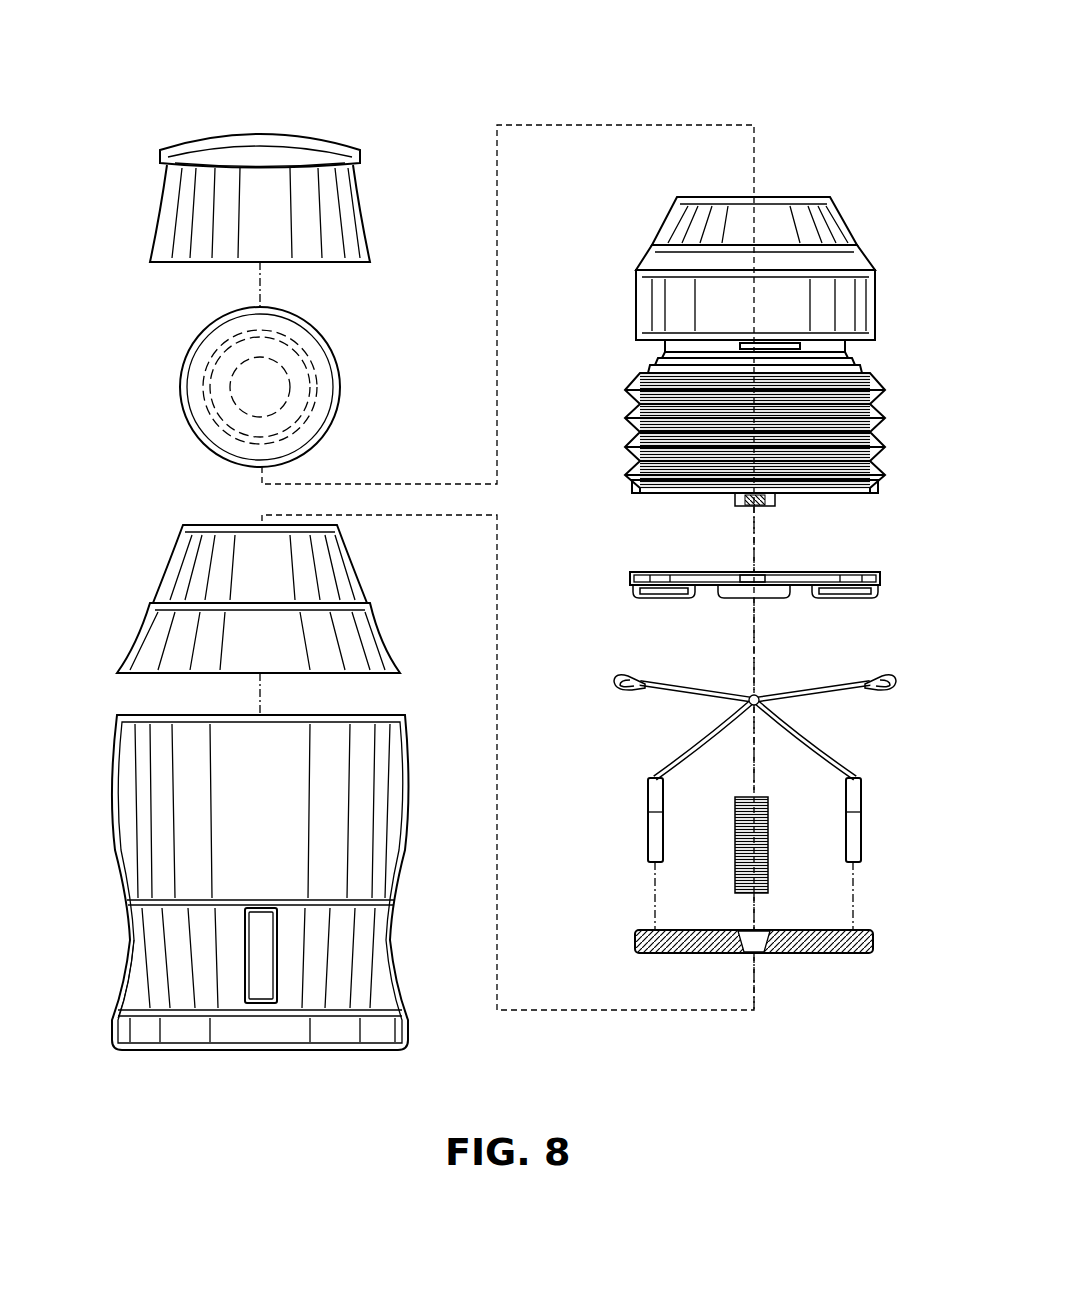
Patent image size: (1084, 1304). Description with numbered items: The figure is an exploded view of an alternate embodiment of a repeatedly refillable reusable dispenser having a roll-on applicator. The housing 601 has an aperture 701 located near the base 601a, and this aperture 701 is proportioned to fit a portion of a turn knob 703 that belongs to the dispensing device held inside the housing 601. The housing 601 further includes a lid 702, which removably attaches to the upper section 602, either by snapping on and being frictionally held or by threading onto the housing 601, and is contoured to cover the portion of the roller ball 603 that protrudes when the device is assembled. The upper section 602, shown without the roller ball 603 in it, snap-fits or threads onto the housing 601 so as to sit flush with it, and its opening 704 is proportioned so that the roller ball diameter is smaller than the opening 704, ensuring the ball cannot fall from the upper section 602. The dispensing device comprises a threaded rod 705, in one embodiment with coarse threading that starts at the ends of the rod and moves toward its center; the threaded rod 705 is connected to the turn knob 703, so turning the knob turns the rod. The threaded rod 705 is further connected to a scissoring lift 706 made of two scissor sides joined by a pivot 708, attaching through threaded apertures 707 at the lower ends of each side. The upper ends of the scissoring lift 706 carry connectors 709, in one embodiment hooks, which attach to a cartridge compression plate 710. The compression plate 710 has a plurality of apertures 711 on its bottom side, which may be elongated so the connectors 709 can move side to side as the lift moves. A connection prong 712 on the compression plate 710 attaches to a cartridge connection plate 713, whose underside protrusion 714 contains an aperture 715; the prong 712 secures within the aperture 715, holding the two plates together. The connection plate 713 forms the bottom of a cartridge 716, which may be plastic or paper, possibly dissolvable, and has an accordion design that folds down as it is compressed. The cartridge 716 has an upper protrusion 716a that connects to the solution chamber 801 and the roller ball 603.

The housing 601 is at (225, 903).
The base 601a is at (120, 995).
The upper section 602 is at (253, 569).
The roller ball 603 is at (185, 370).
The aperture 701 is at (262, 1003).
The lid 702 is at (207, 128).
The turn knob 703 is at (735, 860).
The opening 704 is at (242, 525).
The threaded rod 705 is at (840, 950).
The scissoring lift 706 is at (753, 709).
The threaded apertures 707 is at (648, 800).
The pivot 708 is at (760, 694).
The connectors 709 is at (615, 684).
The cartridge compression plate 710 is at (779, 611).
The apertures 711 is at (660, 598).
The connection prong 712 is at (752, 598).
The cartridge connection plate 713 is at (632, 490).
The protrusion 714 is at (740, 504).
The aperture 715 is at (768, 500).
The cartridge 716 is at (716, 450).
The upper protrusion 716a is at (655, 368).
The solution chamber 801 is at (815, 197).